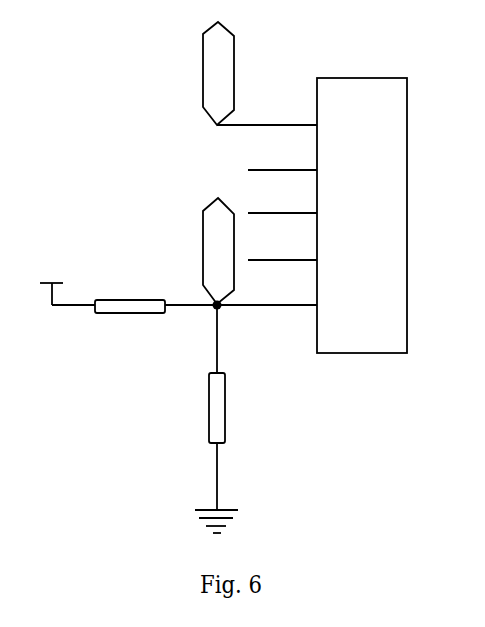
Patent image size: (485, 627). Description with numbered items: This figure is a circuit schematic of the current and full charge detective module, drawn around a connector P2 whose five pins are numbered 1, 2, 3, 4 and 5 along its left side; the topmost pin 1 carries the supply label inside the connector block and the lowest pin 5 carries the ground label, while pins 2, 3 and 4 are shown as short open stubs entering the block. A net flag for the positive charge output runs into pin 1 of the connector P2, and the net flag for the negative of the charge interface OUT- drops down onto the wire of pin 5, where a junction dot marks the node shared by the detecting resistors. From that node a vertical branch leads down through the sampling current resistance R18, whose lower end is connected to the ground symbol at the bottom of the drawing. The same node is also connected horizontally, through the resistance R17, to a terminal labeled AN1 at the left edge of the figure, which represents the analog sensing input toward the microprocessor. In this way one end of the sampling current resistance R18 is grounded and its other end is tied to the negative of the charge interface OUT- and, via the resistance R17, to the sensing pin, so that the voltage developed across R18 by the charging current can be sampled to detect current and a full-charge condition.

The pin 1 (VCC) of connector P2 1 is at (267, 110).
The pin 2 of connector P2 2 is at (282, 155).
The pin 3 of connector P2 3 is at (282, 199).
The pin 4 of connector P2 4 is at (282, 245).
The pin 5 (GND) of connector P2 5 is at (267, 290).
The connector P2 is at (362, 200).
The resistance R17 is at (156, 291).
The sampling current resistance R18 is at (242, 407).
The analog input terminal AN1 is at (67, 277).
The negative of the charge interface OUT- is at (218, 251).